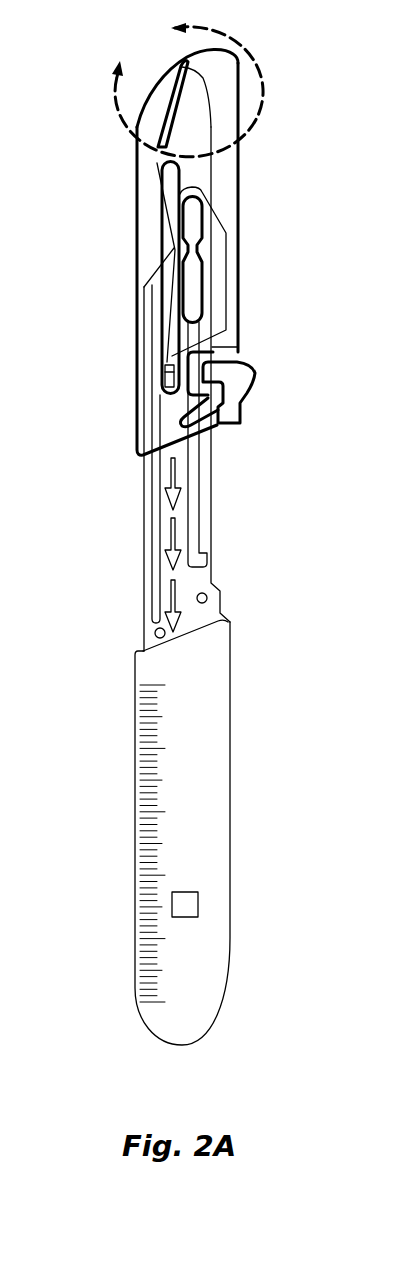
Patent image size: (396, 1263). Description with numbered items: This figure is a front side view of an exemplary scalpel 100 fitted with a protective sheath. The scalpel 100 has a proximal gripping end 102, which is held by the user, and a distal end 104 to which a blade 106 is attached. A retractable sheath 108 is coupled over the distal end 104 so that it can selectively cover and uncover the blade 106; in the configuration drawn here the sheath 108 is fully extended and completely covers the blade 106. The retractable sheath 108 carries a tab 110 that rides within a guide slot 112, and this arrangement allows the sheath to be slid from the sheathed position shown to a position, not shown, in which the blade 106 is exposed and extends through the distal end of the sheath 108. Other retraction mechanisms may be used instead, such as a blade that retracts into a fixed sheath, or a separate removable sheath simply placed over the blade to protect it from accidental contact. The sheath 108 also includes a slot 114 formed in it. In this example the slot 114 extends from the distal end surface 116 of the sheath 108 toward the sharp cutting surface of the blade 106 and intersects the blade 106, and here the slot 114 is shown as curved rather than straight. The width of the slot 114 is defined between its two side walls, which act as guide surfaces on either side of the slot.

The scalpel 100 is at (96, 224).
The proximal gripping end 102 is at (135, 742).
The distal end 104 is at (213, 472).
The blade 106 is at (207, 128).
The retractable sheath 108 is at (230, 192).
The tab 110 is at (240, 366).
The guide slot 112 is at (200, 524).
The slot 114 is at (188, 56).
The distal end surface 116 is at (153, 97).